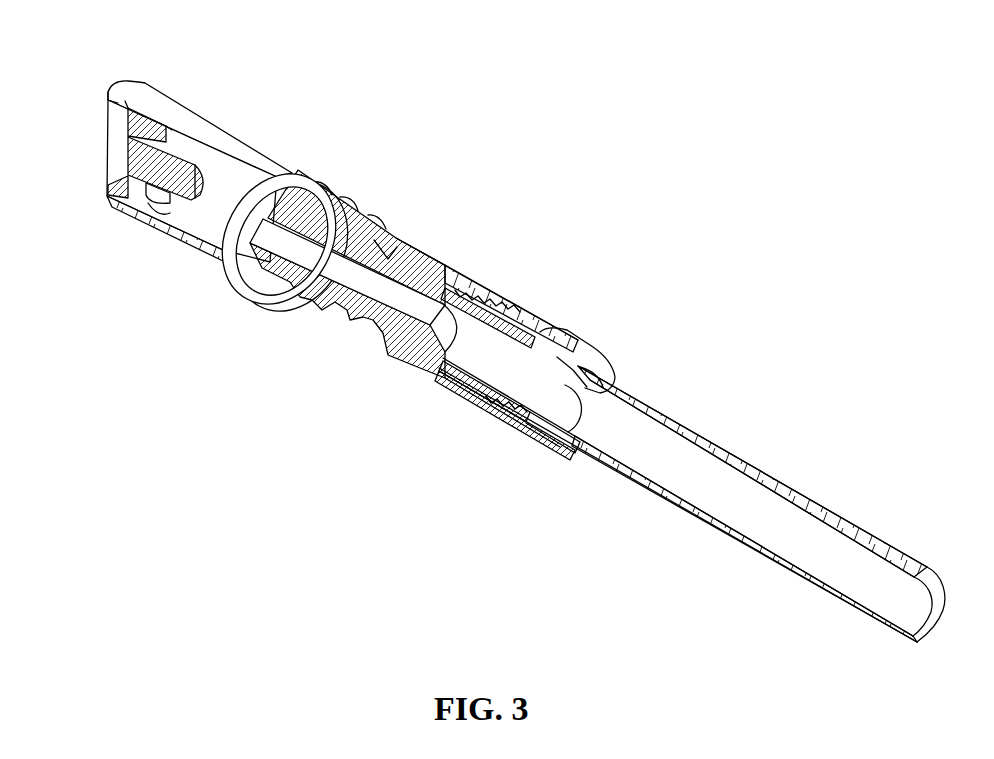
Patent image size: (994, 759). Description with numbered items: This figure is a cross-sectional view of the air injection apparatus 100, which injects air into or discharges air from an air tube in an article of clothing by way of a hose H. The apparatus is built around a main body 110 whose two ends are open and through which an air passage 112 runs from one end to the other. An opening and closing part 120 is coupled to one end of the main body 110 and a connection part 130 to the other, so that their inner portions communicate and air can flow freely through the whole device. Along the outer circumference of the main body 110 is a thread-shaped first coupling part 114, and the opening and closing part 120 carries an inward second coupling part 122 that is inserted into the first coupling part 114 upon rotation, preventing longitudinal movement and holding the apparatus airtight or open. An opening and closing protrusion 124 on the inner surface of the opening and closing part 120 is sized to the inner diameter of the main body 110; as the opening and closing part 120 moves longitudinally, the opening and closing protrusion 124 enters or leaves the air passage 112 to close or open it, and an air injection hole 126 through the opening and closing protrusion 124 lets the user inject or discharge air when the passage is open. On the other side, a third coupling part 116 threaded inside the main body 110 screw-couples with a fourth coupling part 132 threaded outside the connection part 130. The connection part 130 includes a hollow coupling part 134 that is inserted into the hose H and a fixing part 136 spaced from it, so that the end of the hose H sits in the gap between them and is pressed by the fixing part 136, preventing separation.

The air injection apparatus 100 is at (932, 47).
The main body 110 is at (410, 277).
The air passage 112 is at (387, 249).
The first coupling part 114 is at (323, 303).
The third coupling part 116 is at (508, 318).
The opening and closing part 120 is at (230, 148).
The second coupling part 122 is at (310, 193).
The opening and closing protrusion 124 is at (165, 211).
The air injection hole 126 is at (108, 97).
The connection part 130 is at (578, 343).
The fourth coupling part 132 is at (477, 395).
The coupling part 134 is at (543, 392).
The fixing part 136 is at (563, 450).
The hose H is at (727, 455).